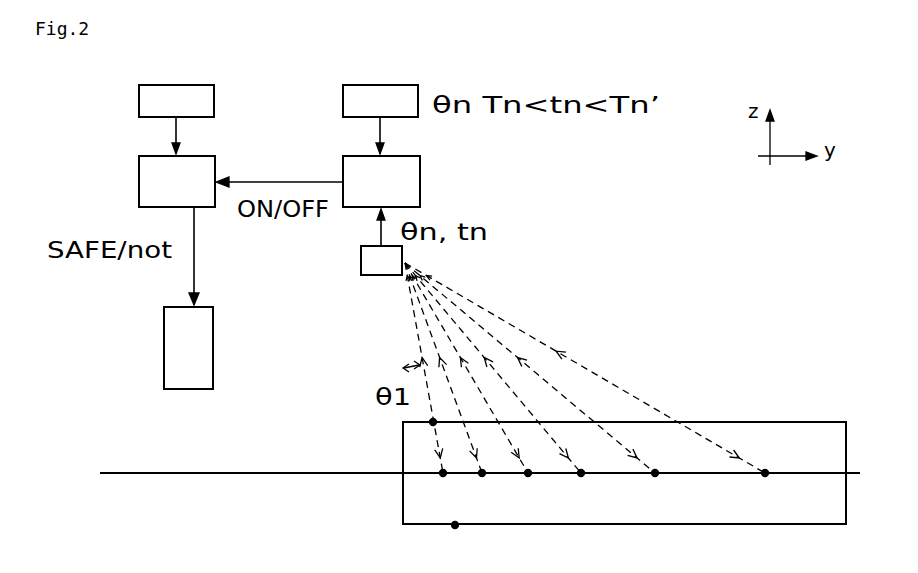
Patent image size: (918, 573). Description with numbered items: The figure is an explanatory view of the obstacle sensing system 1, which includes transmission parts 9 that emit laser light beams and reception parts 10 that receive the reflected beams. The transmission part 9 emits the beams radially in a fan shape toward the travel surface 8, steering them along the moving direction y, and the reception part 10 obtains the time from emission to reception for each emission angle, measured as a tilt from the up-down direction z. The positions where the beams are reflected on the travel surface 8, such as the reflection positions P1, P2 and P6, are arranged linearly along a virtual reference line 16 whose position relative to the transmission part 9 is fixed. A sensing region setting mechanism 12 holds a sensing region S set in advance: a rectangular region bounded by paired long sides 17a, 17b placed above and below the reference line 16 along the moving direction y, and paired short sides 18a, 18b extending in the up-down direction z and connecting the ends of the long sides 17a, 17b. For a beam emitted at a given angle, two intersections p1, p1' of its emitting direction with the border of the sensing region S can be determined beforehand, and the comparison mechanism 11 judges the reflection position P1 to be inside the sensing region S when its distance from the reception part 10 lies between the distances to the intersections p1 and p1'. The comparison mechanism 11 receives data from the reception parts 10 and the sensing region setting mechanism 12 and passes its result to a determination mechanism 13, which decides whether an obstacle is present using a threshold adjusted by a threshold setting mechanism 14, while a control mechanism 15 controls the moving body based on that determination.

The obstacle sensing system 1 is at (655, 233).
The travel surface 8 is at (128, 470).
The transmission part 9 is at (378, 276).
The reception part 10 is at (381, 260).
The comparison mechanism 11 is at (381, 181).
The sensing region setting mechanism 12 is at (380, 101).
The determination mechanism 13 is at (177, 181).
The threshold setting mechanism 14 is at (176, 101).
The control mechanism 15 is at (188, 348).
The reference line 16 is at (657, 471).
The long side 17a is at (738, 420).
The long side 17b is at (688, 524).
The short side 18a is at (403, 466).
The short side 18b is at (846, 495).
The sensing region S is at (816, 420).
The reflection position P1 is at (441, 475).
The measurement point 2 P2 is at (483, 476).
The measurement point 6 P6 is at (768, 471).
The intersection p1 is at (388, 435).
The intersection p1' is at (402, 532).